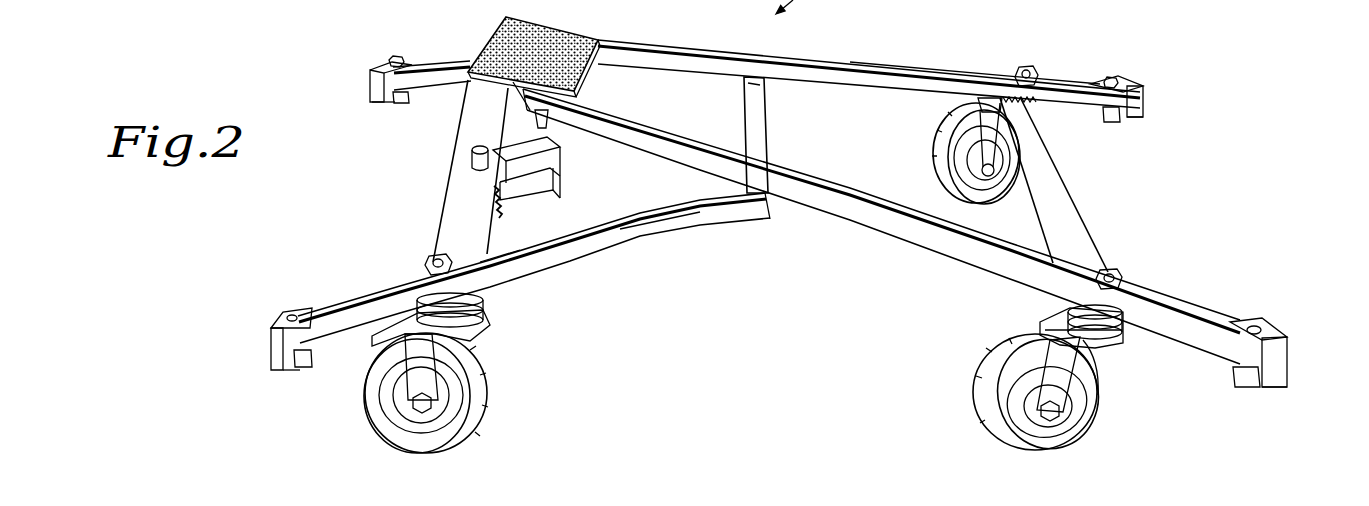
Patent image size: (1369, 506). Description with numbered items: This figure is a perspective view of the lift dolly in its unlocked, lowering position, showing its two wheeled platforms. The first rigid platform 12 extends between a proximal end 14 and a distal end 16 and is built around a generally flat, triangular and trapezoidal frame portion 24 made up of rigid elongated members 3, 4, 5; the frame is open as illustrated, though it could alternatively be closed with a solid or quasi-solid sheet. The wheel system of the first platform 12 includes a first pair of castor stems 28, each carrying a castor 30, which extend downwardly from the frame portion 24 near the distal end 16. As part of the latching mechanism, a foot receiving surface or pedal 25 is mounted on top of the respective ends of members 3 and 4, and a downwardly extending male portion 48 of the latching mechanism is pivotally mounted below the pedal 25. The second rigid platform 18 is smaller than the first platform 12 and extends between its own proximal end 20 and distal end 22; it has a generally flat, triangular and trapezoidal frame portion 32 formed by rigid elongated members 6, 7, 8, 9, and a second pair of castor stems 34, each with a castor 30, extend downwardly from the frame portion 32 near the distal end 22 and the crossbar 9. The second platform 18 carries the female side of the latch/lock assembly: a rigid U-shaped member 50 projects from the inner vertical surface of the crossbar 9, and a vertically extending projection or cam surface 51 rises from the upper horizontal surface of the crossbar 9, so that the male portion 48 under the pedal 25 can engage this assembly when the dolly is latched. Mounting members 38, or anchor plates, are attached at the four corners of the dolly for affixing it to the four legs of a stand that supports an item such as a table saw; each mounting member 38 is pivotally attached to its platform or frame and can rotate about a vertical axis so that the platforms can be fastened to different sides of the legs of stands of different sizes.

The rigid elongated member 3 is at (658, 45).
The rigid elongated member 4 is at (843, 210).
The rigid elongated member 5 is at (1072, 203).
The rigid elongated member 6 is at (455, 62).
The rigid elongated member 7 is at (553, 258).
The rigid elongated member 8 is at (755, 90).
The crossbar 9 is at (450, 222).
The first rigid platform 12 is at (891, 282).
The proximal end 14 is at (550, 105).
The distal end 16 is at (1153, 76).
The second rigid platform 18 is at (698, 256).
The proximal end 20 is at (757, 122).
The distal end 22 is at (372, 117).
The frame portion 24 is at (900, 80).
The foot receiving surface or pedal 25 is at (532, 30).
The castor stem 28 is at (1015, 310).
The castor 30 is at (948, 132).
The frame portion 32 is at (511, 269).
The castor stem 34 is at (359, 355).
The mounting member 38 is at (372, 76).
The male portion 48 is at (548, 125).
The U-shaped member 50 is at (518, 201).
The projection or cam surface 51 is at (468, 161).